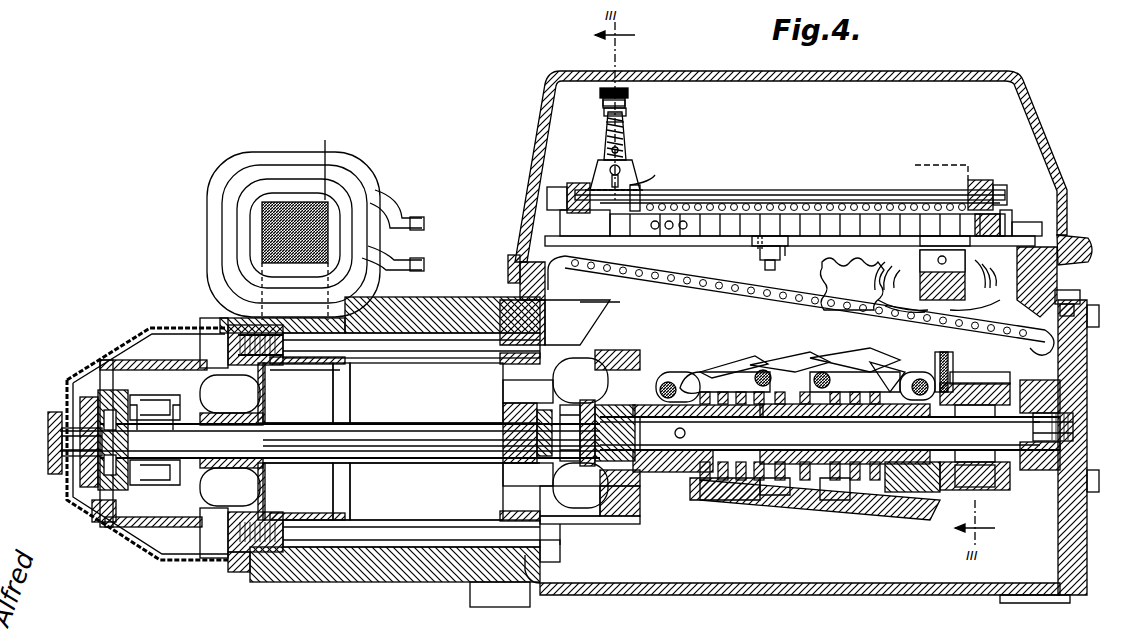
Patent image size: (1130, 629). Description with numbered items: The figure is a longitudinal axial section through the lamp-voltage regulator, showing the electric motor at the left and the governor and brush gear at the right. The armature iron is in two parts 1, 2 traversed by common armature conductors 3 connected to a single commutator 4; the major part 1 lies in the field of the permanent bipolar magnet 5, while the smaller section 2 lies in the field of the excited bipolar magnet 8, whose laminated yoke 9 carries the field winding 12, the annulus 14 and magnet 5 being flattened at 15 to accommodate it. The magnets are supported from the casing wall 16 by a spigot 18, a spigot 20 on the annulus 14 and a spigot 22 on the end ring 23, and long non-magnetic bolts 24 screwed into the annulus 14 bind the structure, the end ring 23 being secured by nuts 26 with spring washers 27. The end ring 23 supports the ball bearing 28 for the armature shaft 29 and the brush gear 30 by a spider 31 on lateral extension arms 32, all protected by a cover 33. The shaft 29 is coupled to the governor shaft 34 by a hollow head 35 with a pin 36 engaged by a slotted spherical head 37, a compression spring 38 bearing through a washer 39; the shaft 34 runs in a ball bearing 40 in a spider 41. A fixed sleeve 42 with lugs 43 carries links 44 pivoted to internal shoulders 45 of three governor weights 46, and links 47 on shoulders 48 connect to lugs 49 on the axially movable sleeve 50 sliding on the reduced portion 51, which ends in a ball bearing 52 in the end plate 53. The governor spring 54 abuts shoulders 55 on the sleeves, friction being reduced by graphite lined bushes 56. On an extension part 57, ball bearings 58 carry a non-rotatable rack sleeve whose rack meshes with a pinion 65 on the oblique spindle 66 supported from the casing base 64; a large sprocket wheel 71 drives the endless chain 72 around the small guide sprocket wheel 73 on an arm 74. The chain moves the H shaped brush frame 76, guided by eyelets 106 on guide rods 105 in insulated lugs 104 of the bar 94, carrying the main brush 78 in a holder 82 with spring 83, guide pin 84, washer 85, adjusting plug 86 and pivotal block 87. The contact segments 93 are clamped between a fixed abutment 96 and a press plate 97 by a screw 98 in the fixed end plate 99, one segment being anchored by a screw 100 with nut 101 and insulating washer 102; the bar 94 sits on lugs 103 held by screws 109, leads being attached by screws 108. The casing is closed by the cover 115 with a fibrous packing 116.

The armature iron major part 1 is at (426, 441).
The armature iron smaller section 2 is at (298, 441).
The armature conductors 3 is at (350, 381).
The commutator 4 is at (165, 473).
The permanent bipolar magnet 5 is at (428, 576).
The excited bipolar magnet 8 is at (282, 205).
The laminated yoke 9 is at (327, 160).
The field winding 12 is at (358, 184).
The annulus 14 is at (395, 575).
The flattened portion 15 is at (360, 306).
The casing wall 16 is at (512, 306).
The spigot 18 is at (500, 366).
The spigot 20 is at (320, 362).
The spigot 22 is at (245, 441).
The end ring 23 is at (242, 563).
The non-magnetic bolts 24 is at (420, 352).
The nuts 26 is at (208, 320).
The spring washers 27 is at (228, 328).
The ball bearing 28 is at (69, 465).
The armature shaft 29 is at (452, 460).
The brush gear 30 is at (150, 399).
The spider 31 is at (90, 396).
The lateral extension arms 32 is at (178, 362).
The cover 33 is at (120, 541).
The governor shaft 34 is at (620, 467).
The hollow head 35 is at (505, 463).
The pin 36 is at (570, 449).
The slotted spherical head 37 is at (550, 451).
The compression spring 38 is at (528, 404).
The washer 39 is at (558, 406).
The ball bearing 40 is at (618, 479).
The spider 41 is at (625, 519).
The fixed sleeve 42 is at (720, 446).
The lugs 43 is at (660, 379).
The links 44 is at (692, 379).
The internal shoulders 45 is at (772, 366).
The governor weights 46 is at (735, 369).
The links 47 is at (887, 370).
The shoulders 48 is at (830, 371).
The lugs 49 is at (917, 375).
The axially movable sleeve 50 is at (900, 491).
The reduced shaft portion 51 is at (850, 433).
The ball bearing 52 is at (1046, 440).
The end plate 53 is at (1063, 447).
The governor spring 54 is at (790, 465).
The shoulders 55 is at (785, 452).
The graphite lined bushes 56 is at (894, 459).
The extension part 57 is at (974, 481).
The ball bearings 58 is at (975, 436).
The casing base 64 is at (797, 579).
The pinion 65 is at (985, 386).
The oblique spindle 66 is at (960, 363).
The large sprocket wheel 71 is at (937, 281).
The endless chain 72 is at (690, 284).
The small guide sprocket wheel 73 is at (622, 277).
The arm 74 is at (568, 282).
The H shaped brush frame 76 is at (603, 103).
The main brush 78 is at (807, 226).
The holder 82 is at (622, 171).
The spring 83 is at (628, 141).
The guide pin 84 is at (606, 123).
The washer 85 is at (626, 117).
The adjusting plug 86 is at (628, 93).
The pivotal block 87 is at (603, 133).
The contact segments 93 is at (765, 201).
The bar 94 is at (845, 284).
The fixed abutment 96 is at (573, 229).
The press plate 97 is at (952, 221).
The screw 98 is at (1008, 213).
The fixed end plate 99 is at (1008, 225).
The screw 100 is at (778, 257).
The nut 101 is at (760, 259).
The insulating washer 102 is at (809, 256).
The lugs 103 is at (512, 243).
The lugs 104 is at (978, 184).
The guide rods 105 is at (712, 194).
The eyelets 106 is at (688, 179).
The screws 108 is at (682, 199).
The screws 109 is at (526, 228).
The cover 115 is at (805, 80).
The packing 116 is at (1075, 268).